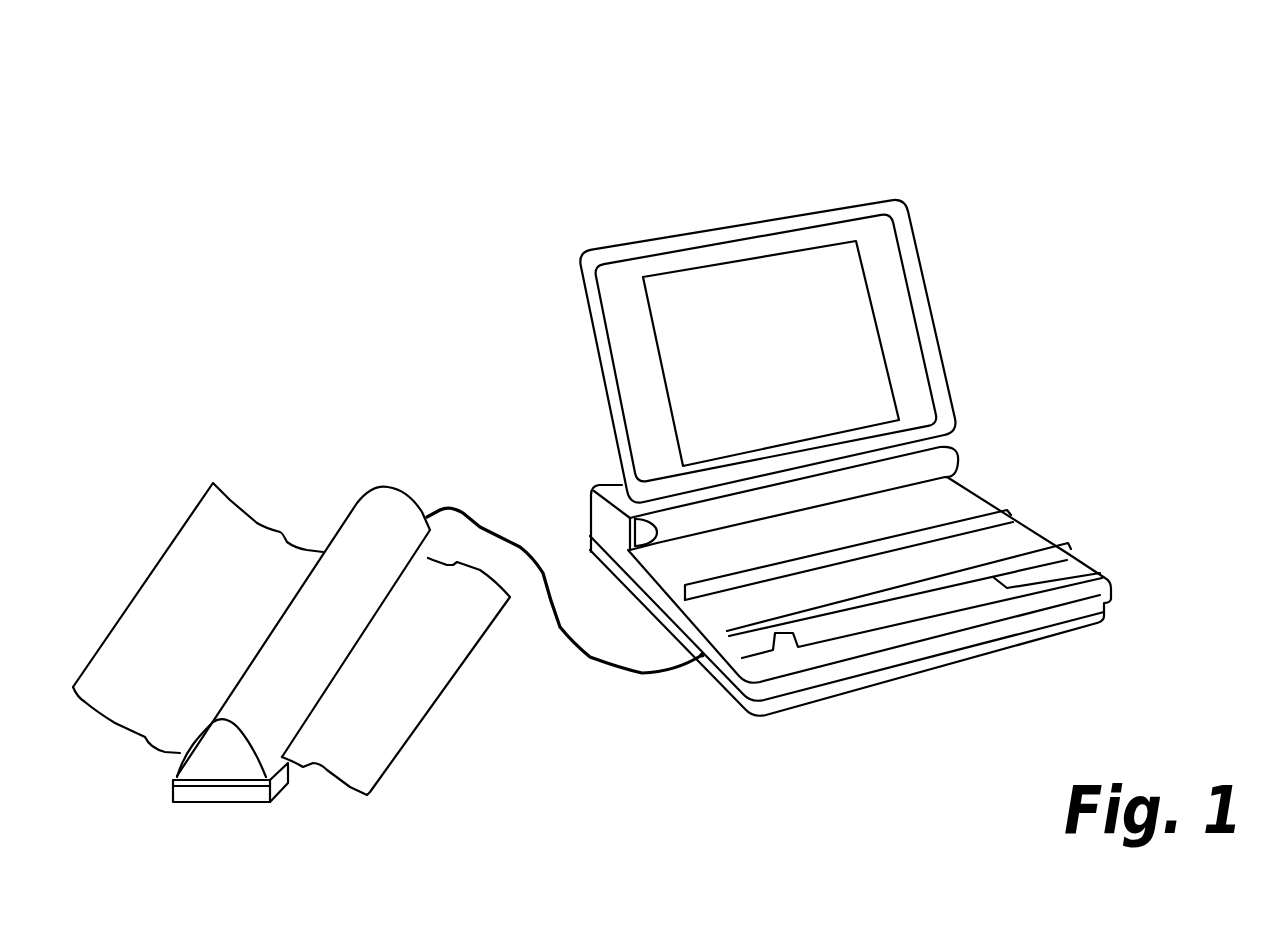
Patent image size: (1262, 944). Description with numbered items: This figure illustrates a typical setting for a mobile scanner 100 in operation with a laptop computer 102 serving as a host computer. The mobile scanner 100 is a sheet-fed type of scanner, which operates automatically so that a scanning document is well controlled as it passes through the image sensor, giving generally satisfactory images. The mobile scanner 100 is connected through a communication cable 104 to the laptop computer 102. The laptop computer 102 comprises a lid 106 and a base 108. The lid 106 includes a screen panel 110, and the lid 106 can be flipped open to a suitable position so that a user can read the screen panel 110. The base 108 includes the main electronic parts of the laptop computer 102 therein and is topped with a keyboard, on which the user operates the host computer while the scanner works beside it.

The mobile scanner 100 is at (347, 425).
The laptop computer 102 is at (835, 93).
The communication cable 104 is at (500, 533).
The lid 106 is at (877, 245).
The base 108 is at (1107, 573).
The screen panel 110 is at (670, 292).